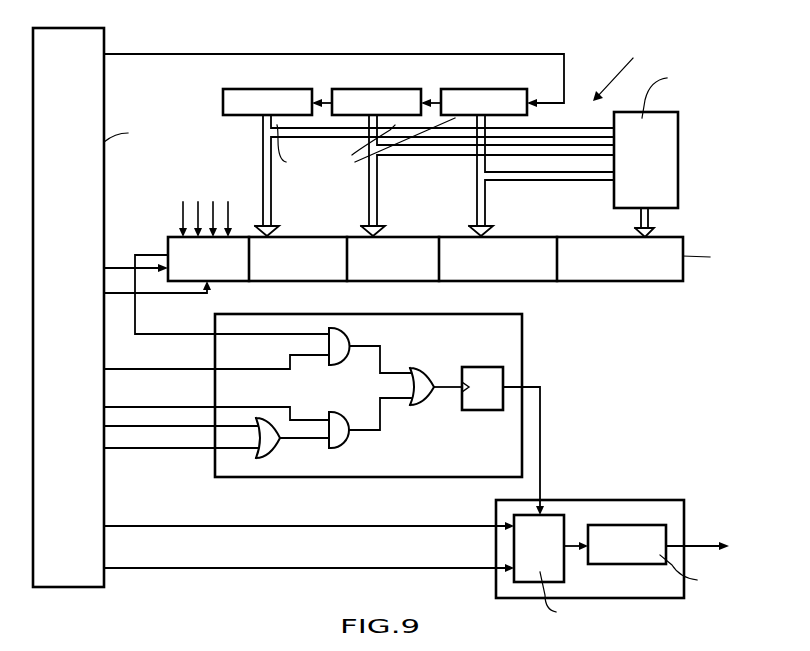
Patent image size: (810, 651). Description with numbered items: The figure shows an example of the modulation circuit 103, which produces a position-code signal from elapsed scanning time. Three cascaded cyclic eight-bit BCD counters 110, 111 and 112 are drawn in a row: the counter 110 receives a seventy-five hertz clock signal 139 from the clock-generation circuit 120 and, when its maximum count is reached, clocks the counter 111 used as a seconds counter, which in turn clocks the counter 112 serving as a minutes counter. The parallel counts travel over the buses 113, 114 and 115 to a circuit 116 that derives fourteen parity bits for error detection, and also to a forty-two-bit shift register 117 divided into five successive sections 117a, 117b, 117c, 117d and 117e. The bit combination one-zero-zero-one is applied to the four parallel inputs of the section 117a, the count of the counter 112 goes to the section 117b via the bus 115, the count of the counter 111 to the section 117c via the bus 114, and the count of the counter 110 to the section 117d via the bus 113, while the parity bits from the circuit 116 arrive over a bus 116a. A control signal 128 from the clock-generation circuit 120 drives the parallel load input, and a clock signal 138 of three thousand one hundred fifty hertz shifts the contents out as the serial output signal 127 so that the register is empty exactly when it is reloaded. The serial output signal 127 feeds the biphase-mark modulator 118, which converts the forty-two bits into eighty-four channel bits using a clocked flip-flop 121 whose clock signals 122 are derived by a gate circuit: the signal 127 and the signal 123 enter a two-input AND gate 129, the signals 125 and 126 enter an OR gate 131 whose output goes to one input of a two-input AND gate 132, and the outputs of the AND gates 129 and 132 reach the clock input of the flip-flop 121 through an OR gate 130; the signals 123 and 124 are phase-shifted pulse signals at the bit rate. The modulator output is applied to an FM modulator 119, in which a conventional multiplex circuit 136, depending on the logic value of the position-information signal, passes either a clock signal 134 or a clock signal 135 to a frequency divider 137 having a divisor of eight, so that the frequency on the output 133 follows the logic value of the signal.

The modulation circuit 103 is at (650, 55).
The counter 110 is at (501, 88).
The counter 111 is at (399, 88).
The counter 112 is at (276, 88).
The bus 113 is at (487, 200).
The bus 114 is at (378, 197).
The bus 115 is at (272, 195).
The circuit 116 is at (678, 195).
The bus 116a is at (650, 222).
The shift register 117 is at (663, 281).
The section 117a is at (218, 270).
The section 117b is at (302, 268).
The section 117c is at (396, 268).
The section 117d is at (500, 268).
The section 117e is at (613, 268).
The biphase-mark modulator 118 is at (523, 327).
The FM modulator 119 is at (655, 489).
The clock-generation circuit 120 is at (64, 27).
The clocked flip-flop 121 is at (483, 411).
The clock signals 122 is at (446, 390).
The signal 123 is at (168, 366).
The signal 124 is at (168, 404).
The signal 125 is at (168, 428).
The signal 126 is at (168, 450).
The serial output signal 127 is at (152, 253).
The control signal 128 is at (175, 294).
The AND gate 129 is at (349, 334).
The OR gate 130 is at (423, 367).
The OR gate 131 is at (278, 448).
The AND gate 132 is at (348, 441).
The output 133 is at (705, 545).
The clock signal 134 is at (422, 524).
The clock signal 135 is at (422, 566).
The multiplex circuit 136 is at (566, 570).
The frequency divider 137 is at (641, 565).
The clock signal 138 is at (157, 264).
The clock signal 139 is at (407, 54).